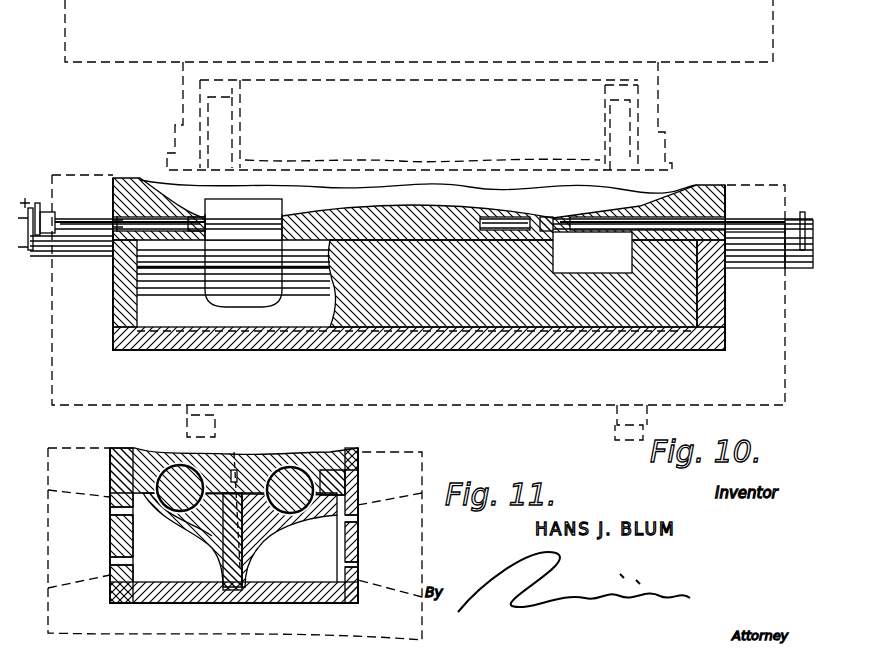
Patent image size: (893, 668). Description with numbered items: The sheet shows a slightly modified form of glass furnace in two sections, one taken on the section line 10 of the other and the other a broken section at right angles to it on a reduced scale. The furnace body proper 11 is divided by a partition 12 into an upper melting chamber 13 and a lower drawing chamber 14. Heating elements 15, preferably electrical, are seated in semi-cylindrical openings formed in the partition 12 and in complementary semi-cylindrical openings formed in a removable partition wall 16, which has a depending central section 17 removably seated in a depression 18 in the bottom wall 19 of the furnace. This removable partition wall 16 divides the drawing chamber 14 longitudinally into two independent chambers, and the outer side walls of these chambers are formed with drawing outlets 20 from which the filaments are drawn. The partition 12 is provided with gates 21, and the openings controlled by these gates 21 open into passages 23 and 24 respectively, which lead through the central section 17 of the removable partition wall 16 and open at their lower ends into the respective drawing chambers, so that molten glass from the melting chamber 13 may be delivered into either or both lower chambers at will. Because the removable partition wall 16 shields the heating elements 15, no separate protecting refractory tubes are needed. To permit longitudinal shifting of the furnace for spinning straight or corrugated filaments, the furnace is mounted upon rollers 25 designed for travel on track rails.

In FIG. 11, the section line 10 is at (112, 505).
In FIG. 10, the furnace body proper 11 is at (686, 194).
In FIG. 11, the furnace body proper 11 is at (339, 604).
In FIG. 10, the partition 12 is at (489, 215).
In FIG. 11, the partition 12 is at (264, 461).
In FIG. 10, the melting chamber 13 is at (419, 209).
In FIG. 11, the melting chamber 13 is at (172, 447).
In FIG. 10, the drawing chamber 14 is at (417, 283).
In FIG. 11, the drawing chamber 14 is at (146, 537).
In FIG. 11, the heating elements 15 is at (197, 460).
In FIG. 11, the removable partition wall 16 is at (192, 540).
In FIG. 11, the depending central section 17 is at (250, 563).
In FIG. 10, the depression 18 is at (411, 350).
In FIG. 11, the depression 18 is at (236, 600).
In FIG. 10, the bottom wall 19 is at (382, 349).
In FIG. 11, the bottom wall 19 is at (234, 606).
In FIG. 11, the drawing outlets 20 is at (110, 563).
In FIG. 10, the gates 21 is at (40, 200).
In FIG. 11, the gates 21 is at (233, 469).
In FIG. 10, the passage 23 is at (250, 216).
In FIG. 11, the passage 23 is at (318, 548).
In FIG. 10, the passage 24 is at (600, 234).
In FIG. 11, the passage 24 is at (225, 577).
In FIG. 10, the rollers 25 is at (223, 138).